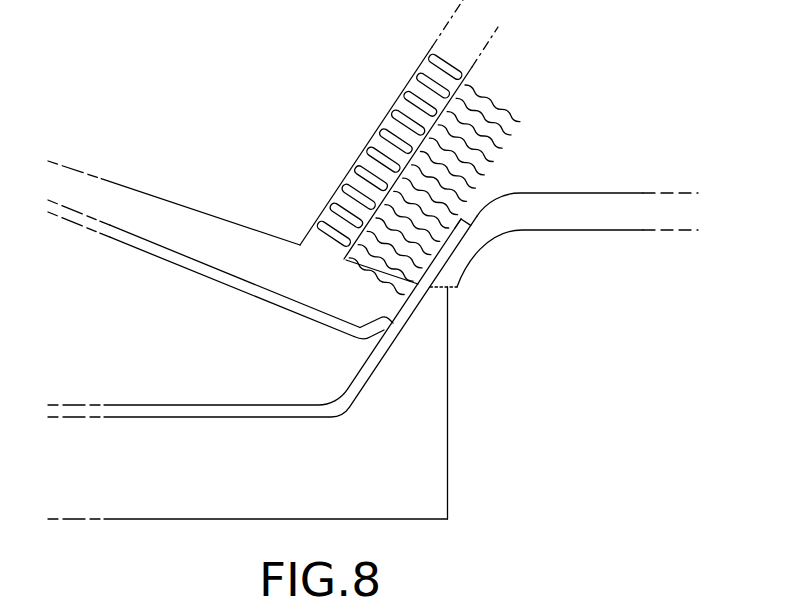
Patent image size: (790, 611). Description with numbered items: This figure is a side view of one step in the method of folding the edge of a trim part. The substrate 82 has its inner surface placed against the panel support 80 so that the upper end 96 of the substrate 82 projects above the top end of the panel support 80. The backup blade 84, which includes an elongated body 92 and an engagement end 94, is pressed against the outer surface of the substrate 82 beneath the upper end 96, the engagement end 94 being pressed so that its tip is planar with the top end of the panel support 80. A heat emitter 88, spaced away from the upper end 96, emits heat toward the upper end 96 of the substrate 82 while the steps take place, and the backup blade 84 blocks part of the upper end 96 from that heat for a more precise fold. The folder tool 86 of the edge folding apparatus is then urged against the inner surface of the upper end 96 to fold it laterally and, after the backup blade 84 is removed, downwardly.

The panel support 80 is at (443, 484).
The substrate 82 is at (241, 405).
The backup blade 84 is at (207, 270).
The folder tool 86 is at (600, 198).
The heat emitter 88 is at (365, 153).
The elongated body 92 is at (112, 230).
The engagement end 94 is at (372, 322).
The upper end 96 is at (466, 219).